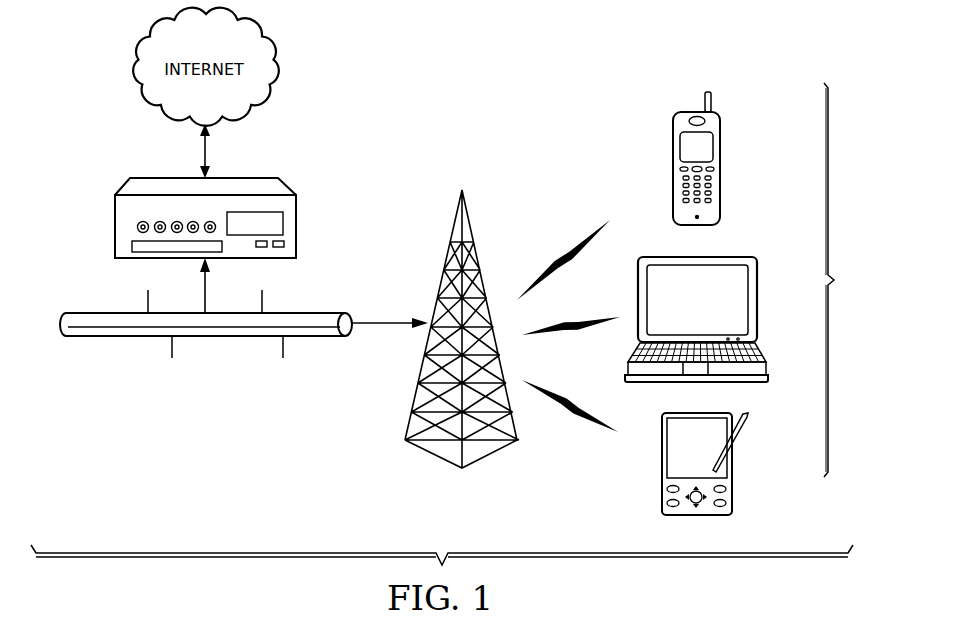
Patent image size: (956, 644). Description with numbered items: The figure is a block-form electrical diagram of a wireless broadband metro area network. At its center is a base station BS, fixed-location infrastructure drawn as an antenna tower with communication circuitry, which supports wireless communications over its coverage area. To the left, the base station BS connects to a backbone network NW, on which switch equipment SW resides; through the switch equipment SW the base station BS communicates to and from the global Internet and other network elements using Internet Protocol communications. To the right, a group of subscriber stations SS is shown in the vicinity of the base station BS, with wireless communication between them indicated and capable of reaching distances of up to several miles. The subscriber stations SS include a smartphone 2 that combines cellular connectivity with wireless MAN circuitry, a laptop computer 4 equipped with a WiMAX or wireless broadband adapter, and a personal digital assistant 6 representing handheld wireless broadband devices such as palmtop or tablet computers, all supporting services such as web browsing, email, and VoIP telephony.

The switch equipment SW is at (115, 222).
The backbone network NW is at (127, 338).
The base station BS is at (434, 300).
The subscriber stations SS is at (848, 280).
The smartphone 2 is at (721, 168).
The laptop computer 4 is at (758, 300).
The personal digital assistant 6 is at (733, 462).